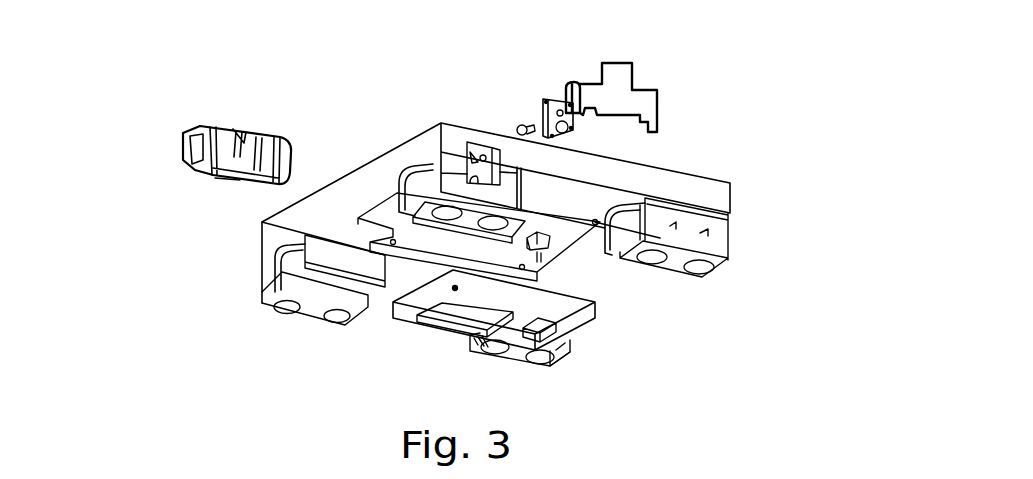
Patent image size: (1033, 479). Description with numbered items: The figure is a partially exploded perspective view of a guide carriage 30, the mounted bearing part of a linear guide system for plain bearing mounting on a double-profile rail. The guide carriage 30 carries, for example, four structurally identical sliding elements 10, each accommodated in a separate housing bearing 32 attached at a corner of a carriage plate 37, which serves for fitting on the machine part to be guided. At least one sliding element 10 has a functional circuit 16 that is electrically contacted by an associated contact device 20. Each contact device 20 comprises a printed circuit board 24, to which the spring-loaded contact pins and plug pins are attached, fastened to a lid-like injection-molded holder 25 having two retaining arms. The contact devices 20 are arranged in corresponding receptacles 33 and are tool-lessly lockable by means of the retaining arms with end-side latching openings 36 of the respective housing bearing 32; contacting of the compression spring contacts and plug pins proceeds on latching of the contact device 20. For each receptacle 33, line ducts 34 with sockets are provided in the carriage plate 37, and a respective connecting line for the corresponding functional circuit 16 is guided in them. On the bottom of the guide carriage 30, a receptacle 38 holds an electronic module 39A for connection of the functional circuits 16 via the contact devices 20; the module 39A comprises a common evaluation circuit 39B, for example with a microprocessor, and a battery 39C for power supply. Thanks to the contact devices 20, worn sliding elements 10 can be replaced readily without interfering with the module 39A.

The sliding element 10 is at (229, 112).
The functional circuit 16 is at (215, 180).
The contact device 20 is at (270, 263).
The printed circuit board 24 is at (588, 120).
The holder 25 is at (638, 92).
The guide carriage 30 is at (405, 114).
The housing bearing 32 is at (408, 185).
The receptacle 33 is at (472, 152).
The line duct 34 is at (483, 155).
The latching opening 36 is at (437, 175).
The carriage plate 37 is at (713, 194).
The receptacle 38 is at (565, 229).
The electronic module 39A is at (387, 320).
The evaluation circuit 39B is at (450, 317).
The battery 39C is at (546, 338).